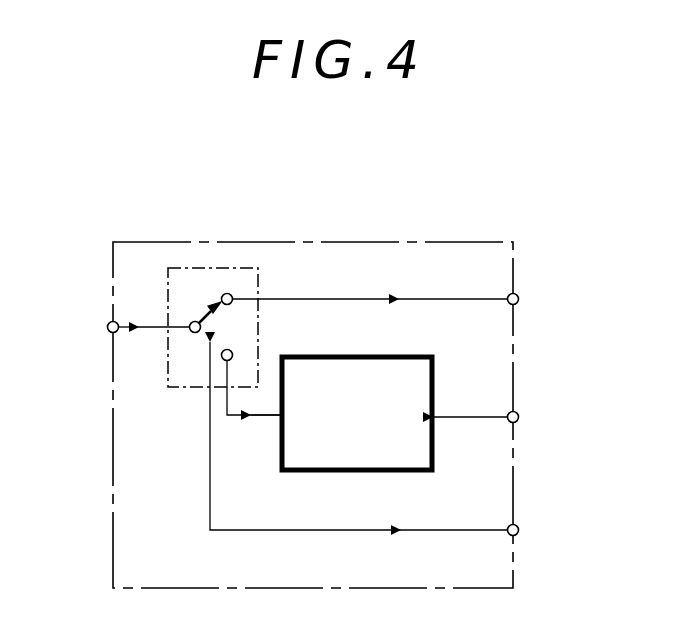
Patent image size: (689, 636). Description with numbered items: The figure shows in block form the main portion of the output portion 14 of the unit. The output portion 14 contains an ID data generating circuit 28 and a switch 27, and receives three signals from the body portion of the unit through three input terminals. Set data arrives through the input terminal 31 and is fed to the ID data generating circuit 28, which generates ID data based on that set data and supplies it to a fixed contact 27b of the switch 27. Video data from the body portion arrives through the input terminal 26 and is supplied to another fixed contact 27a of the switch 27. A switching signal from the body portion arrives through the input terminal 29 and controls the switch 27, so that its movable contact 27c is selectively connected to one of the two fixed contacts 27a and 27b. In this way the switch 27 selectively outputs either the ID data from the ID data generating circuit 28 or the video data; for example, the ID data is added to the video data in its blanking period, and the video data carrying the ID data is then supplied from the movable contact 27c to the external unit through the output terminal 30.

The output portion 14 is at (432, 242).
The input terminal 26 is at (519, 299).
The switch 27 is at (233, 268).
The fixed contact 27a is at (231, 293).
The fixed contact 27b is at (231, 350).
The movable contact 27c is at (207, 316).
The ID data generating circuit 28 is at (330, 473).
The input terminal 29 is at (519, 530).
The output terminal 30 is at (107, 327).
The input terminal 31 is at (519, 417).